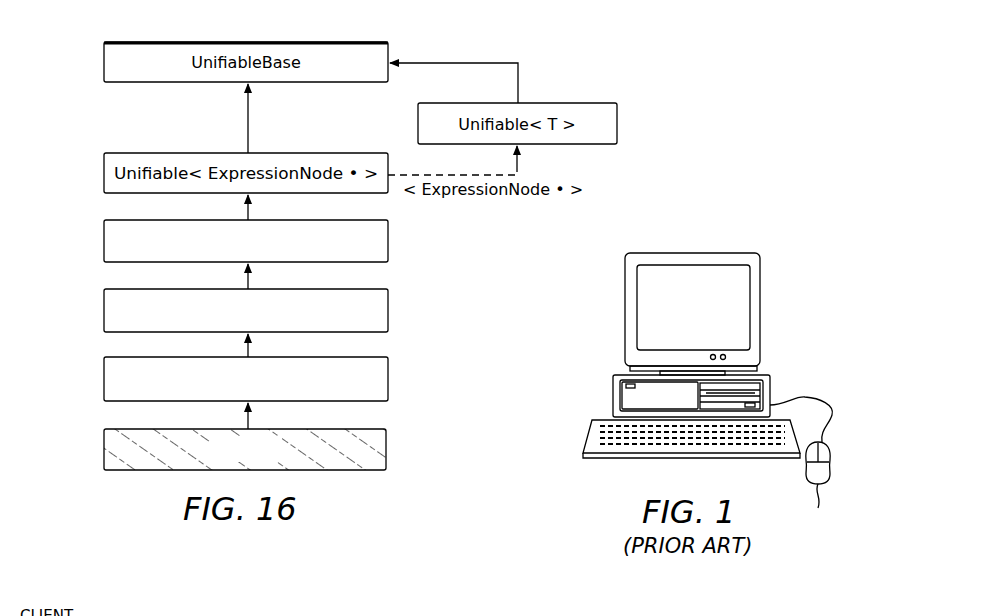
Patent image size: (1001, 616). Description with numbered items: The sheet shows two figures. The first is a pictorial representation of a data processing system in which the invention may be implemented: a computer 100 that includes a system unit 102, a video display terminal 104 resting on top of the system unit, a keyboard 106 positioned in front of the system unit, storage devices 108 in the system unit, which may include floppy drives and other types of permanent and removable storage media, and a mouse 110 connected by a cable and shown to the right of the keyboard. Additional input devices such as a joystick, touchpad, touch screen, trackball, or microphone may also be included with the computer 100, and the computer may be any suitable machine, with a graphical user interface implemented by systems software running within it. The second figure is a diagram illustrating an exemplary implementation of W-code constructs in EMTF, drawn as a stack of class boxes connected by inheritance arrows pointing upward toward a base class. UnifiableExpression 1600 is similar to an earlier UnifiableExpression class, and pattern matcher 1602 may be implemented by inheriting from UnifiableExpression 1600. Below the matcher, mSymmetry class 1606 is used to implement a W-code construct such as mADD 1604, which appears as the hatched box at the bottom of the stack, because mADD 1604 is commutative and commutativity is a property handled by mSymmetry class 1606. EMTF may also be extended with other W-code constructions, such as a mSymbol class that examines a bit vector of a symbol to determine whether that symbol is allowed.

In FIG. 16, the UnifiableExpression 1600 is at (104, 241).
In FIG. 16, the pattern matcher 1602 is at (104, 309).
In FIG. 16, the mADD 1604 is at (104, 447).
In FIG. 16, the mSymmetry class 1606 is at (104, 378).
In FIG. 1, the computer 100 is at (600, 298).
In FIG. 1, the system unit 102 is at (613, 392).
In FIG. 1, the video display terminal 104 is at (760, 311).
In FIG. 1, the keyboard 106 is at (604, 455).
In FIG. 1, the storage devices 108 is at (770, 392).
In FIG. 1, the mouse 110 is at (805, 465).